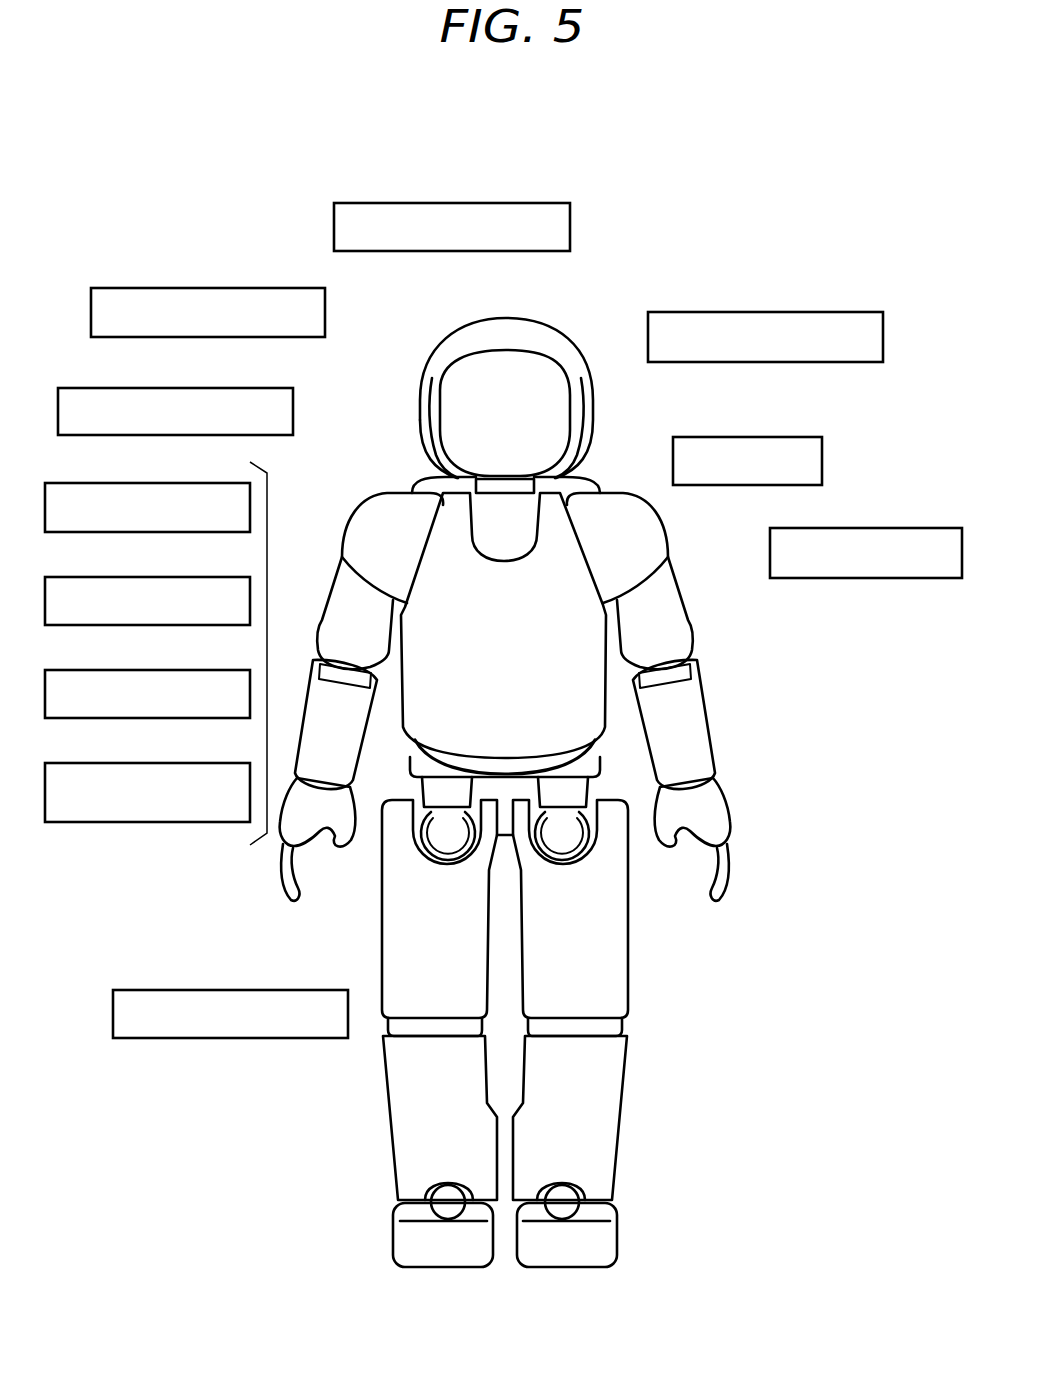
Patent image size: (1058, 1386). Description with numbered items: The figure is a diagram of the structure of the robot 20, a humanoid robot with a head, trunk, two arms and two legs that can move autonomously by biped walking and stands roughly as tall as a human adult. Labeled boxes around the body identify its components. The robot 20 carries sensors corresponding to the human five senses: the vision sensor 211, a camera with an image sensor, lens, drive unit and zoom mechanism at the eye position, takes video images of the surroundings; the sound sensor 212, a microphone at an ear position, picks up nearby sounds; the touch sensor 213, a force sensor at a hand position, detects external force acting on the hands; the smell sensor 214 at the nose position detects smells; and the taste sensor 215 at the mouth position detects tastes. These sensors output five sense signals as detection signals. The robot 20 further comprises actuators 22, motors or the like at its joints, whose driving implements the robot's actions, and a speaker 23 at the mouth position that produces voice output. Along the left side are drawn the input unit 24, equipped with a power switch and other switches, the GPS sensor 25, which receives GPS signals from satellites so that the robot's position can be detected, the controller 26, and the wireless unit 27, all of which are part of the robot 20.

The robot 20 is at (656, 234).
The vision sensor 211 is at (480, 400).
The sound sensor 212 is at (418, 413).
The touch sensor 213 is at (288, 895).
The smell sensor 214 is at (503, 413).
The taste sensor 215 is at (505, 448).
The actuator 22 is at (713, 803).
The speaker 23 is at (515, 460).
The input unit 24 is at (198, 483).
The GPS sensor 25 is at (198, 577).
The controller 26 is at (450, 650).
The wireless unit 27 is at (198, 763).